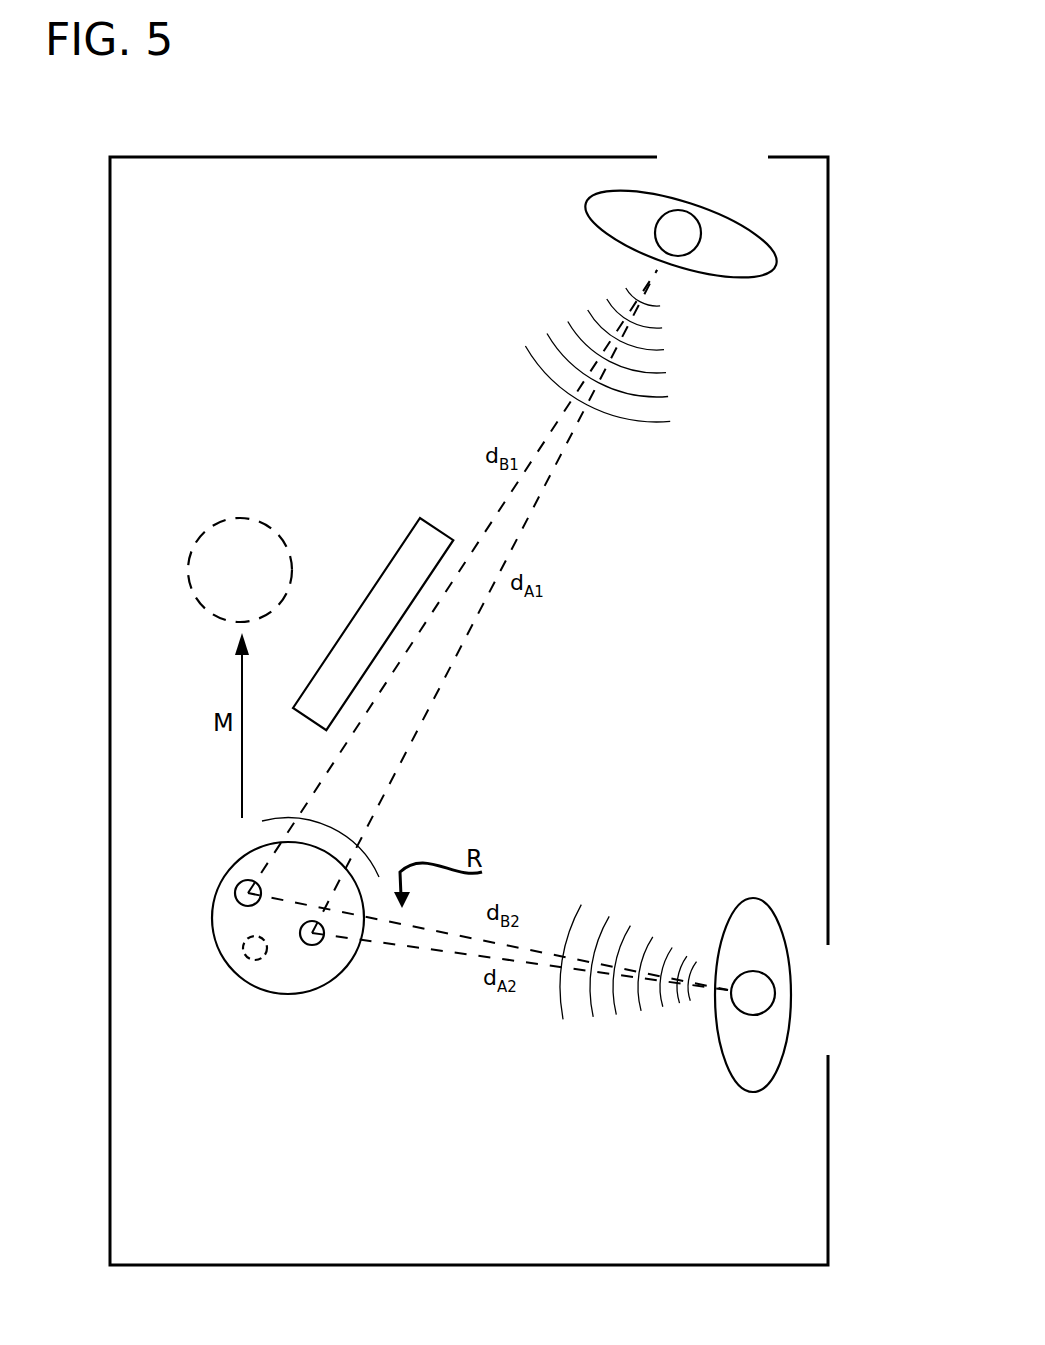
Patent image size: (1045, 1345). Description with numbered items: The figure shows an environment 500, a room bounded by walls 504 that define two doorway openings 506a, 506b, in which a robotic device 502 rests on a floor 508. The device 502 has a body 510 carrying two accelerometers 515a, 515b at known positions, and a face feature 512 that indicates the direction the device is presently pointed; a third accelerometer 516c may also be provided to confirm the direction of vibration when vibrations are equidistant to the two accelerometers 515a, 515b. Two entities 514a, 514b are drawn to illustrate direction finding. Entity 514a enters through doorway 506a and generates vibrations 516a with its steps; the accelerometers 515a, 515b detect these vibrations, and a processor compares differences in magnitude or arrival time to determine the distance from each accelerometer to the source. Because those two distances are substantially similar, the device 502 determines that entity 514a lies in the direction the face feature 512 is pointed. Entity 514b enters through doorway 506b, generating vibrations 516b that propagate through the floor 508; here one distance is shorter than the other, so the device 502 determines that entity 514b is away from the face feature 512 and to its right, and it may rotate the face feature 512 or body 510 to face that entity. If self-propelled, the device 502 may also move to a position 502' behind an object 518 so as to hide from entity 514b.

The environment 500 is at (405, 125).
The robotic device 502 is at (211, 1067).
The position behind object 502' is at (206, 591).
The walls 504 is at (828, 573).
The doorway 506a is at (722, 133).
The doorway 506b is at (838, 1000).
The floor 508 is at (620, 1205).
The body 510 is at (290, 995).
The face feature 512 is at (340, 835).
The entity 514a is at (725, 263).
The entity 514b is at (745, 1063).
The accelerometer 515a is at (318, 947).
The accelerometer 515b is at (233, 887).
The vibrations 516a is at (618, 422).
The vibrations 516b is at (590, 1000).
The third accelerometer 516c is at (245, 950).
The object 518 is at (425, 540).